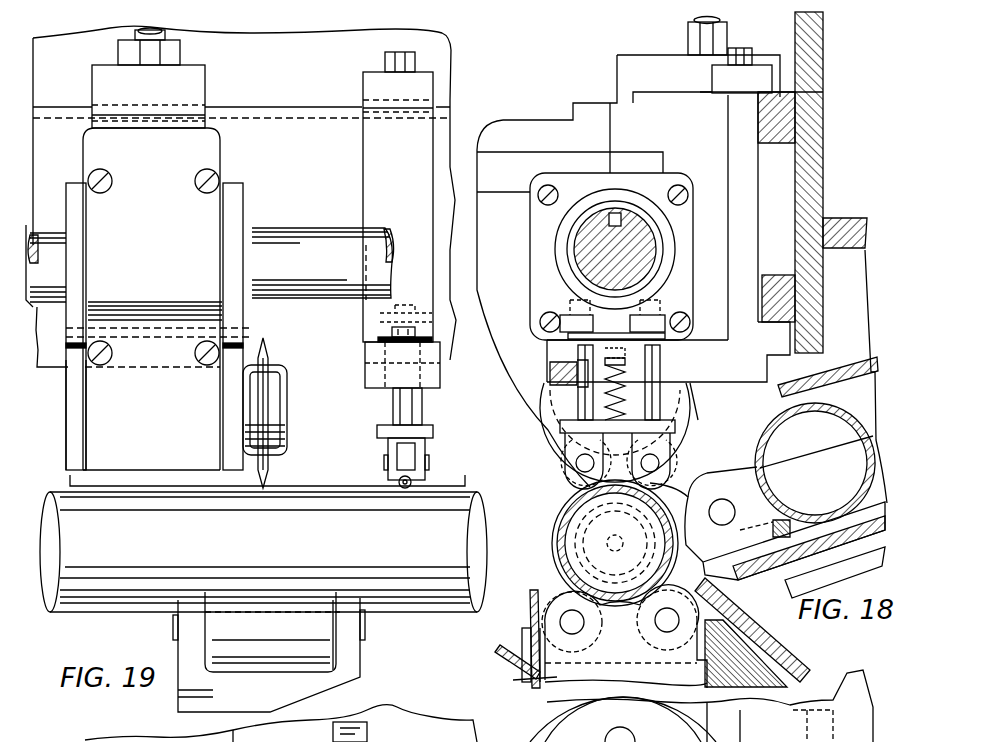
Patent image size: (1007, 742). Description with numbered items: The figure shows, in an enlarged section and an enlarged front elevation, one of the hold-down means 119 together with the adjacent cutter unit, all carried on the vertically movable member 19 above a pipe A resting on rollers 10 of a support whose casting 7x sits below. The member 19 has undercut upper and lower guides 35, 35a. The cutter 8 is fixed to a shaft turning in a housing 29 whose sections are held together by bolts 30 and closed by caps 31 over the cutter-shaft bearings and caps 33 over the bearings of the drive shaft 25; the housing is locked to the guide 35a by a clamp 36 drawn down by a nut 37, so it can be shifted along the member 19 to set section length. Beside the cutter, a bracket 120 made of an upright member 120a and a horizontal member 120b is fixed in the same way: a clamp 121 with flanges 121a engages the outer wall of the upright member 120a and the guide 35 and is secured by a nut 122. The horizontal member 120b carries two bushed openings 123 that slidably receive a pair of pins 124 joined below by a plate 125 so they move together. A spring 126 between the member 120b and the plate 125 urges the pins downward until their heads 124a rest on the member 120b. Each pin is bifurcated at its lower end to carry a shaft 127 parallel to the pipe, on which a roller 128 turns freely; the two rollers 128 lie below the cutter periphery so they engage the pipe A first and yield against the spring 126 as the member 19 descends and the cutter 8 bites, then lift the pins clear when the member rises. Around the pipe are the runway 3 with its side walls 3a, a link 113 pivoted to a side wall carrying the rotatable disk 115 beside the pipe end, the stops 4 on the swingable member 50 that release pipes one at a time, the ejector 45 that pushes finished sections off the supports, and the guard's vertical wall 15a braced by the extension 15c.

In FIG. 18, the runway 3 is at (810, 527).
In FIG. 18, the side wall 3a is at (818, 452).
In FIG. 18, the stop 4 is at (766, 533).
In FIG. 19, the cutter 8 is at (268, 471).
In FIG. 18, the cutter 8 is at (560, 443).
In FIG. 19, the roller 10 is at (270, 590).
In FIG. 18, the roller 10 is at (533, 640).
In FIG. 18, the vertical wall 15a is at (530, 608).
In FIG. 18, the extension of wall 15b 15c is at (500, 660).
In FIG. 19, the casting 7x is at (185, 705).
In FIG. 18, the casting 7x is at (520, 681).
In FIG. 19, the member 19 is at (440, 50).
In FIG. 18, the member 19 is at (823, 203).
In FIG. 19, the shaft 25 is at (300, 240).
In FIG. 18, the shaft 25 is at (600, 233).
In FIG. 19, the housing 29 is at (220, 148).
In FIG. 19, the bolt 30 is at (200, 190).
In FIG. 19, the cap 31 is at (68, 396).
In FIG. 19, the cap 33 is at (66, 196).
In FIG. 19, the upper guide 35 is at (270, 110).
In FIG. 18, the upper guide 35 is at (777, 140).
In FIG. 18, the lower guide 35a is at (782, 275).
In FIG. 19, the clamp 36 is at (92, 84).
In FIG. 18, the clamp 36 is at (617, 79).
In FIG. 19, the nut 37 is at (180, 50).
In FIG. 18, the nut 37 is at (688, 40).
In FIG. 18, the ejector 45 is at (717, 598).
In FIG. 18, the swingable member 50 is at (860, 575).
In FIG. 18, the link 113 is at (717, 458).
In FIG. 18, the disk 115 is at (553, 530).
In FIG. 19, the hold-down means 119 is at (460, 444).
In FIG. 19, the bracket 120 is at (443, 392).
In FIG. 18, the bracket 120 is at (668, 363).
In FIG. 19, the upright member 120a is at (363, 143).
In FIG. 18, the upright member 120a is at (742, 136).
In FIG. 19, the horizontal member 120b is at (372, 358).
In FIG. 18, the horizontal member 120b is at (760, 368).
In FIG. 19, the clamp 121 is at (437, 80).
In FIG. 18, the clamp 121 is at (712, 79).
In FIG. 19, the flange 121a is at (437, 115).
In FIG. 18, the flange 121a is at (713, 104).
In FIG. 18, the nut 122 is at (738, 50).
In FIG. 18, the opening 123 is at (548, 375).
In FIG. 19, the pin 124 is at (393, 406).
In FIG. 18, the pin 124 is at (575, 393).
In FIG. 18, the head 124a is at (547, 322).
In FIG. 19, the plate 125 is at (377, 433).
In FIG. 18, the plate 125 is at (560, 424).
In FIG. 18, the spring 126 is at (618, 394).
In FIG. 19, the shaft 127 is at (429, 467).
In FIG. 18, the shaft 127 is at (662, 463).
In FIG. 19, the roller 128 is at (385, 488).
In FIG. 18, the roller 128 is at (620, 490).
In FIG. 19, the pipe A is at (377, 606).
In FIG. 18, the pipe A is at (762, 440).